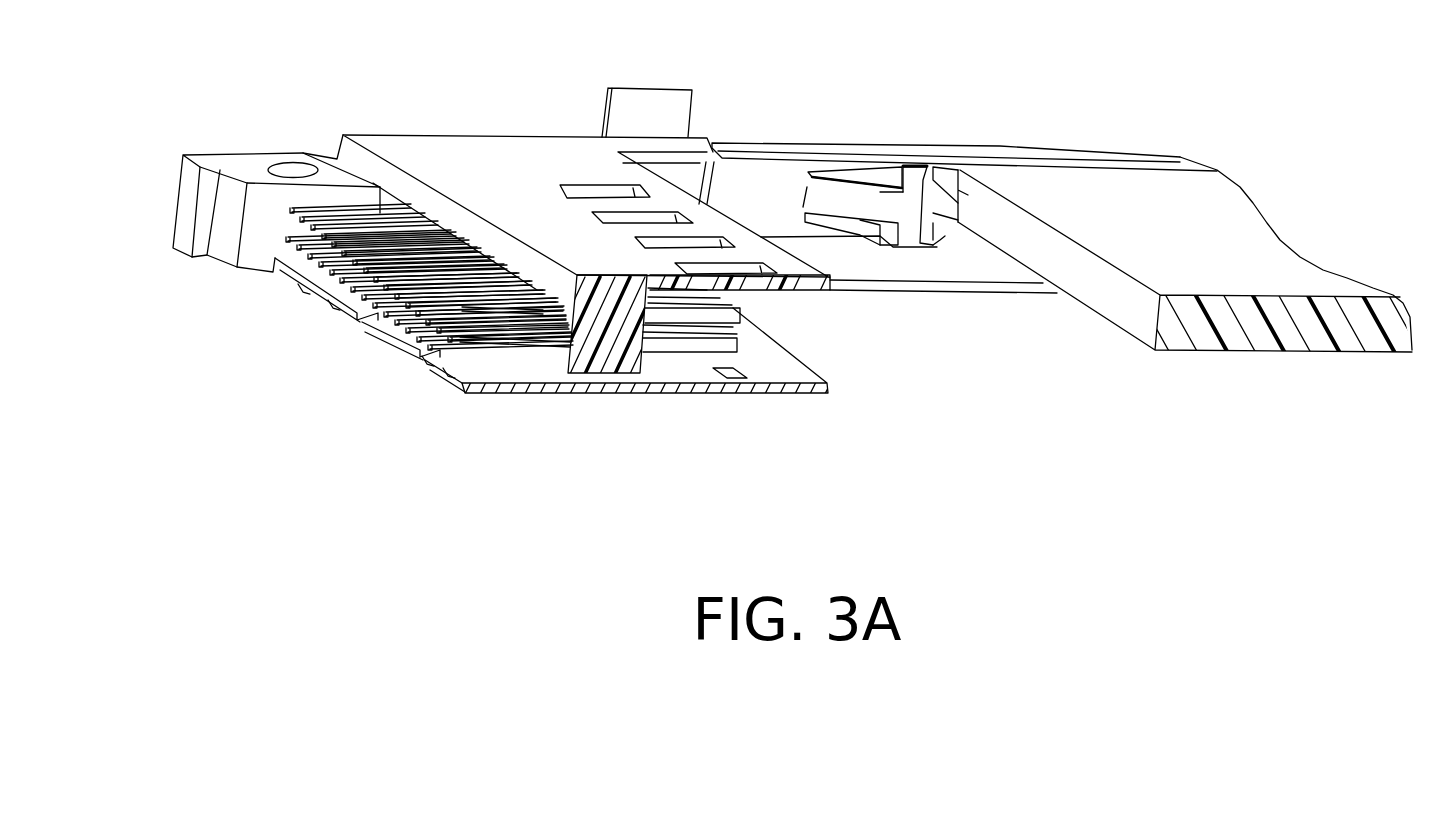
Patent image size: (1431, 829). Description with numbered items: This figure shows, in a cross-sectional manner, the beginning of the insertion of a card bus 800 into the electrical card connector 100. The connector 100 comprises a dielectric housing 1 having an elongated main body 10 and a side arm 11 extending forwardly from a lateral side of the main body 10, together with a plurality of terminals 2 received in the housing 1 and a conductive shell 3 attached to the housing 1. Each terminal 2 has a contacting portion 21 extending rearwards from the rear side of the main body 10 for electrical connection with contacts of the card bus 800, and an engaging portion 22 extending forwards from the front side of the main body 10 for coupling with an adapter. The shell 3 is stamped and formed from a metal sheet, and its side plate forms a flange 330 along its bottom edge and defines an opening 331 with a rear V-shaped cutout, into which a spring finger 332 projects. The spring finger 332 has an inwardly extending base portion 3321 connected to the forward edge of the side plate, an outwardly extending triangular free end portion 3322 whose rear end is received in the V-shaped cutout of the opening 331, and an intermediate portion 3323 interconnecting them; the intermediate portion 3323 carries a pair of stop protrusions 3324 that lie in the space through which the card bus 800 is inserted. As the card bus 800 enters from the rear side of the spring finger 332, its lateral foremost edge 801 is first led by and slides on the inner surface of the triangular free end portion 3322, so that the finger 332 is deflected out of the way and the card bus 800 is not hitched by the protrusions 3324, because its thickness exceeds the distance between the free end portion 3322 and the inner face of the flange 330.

The electrical card connector 100 is at (458, 112).
The dielectric housing 1 is at (612, 335).
The main body 10 is at (400, 147).
The side arm 11 is at (187, 207).
The terminal 2 is at (353, 278).
The contacting portion 21 is at (720, 343).
The engaging portion 22 is at (485, 335).
The conductive shell 3 is at (1100, 152).
The flange 330 is at (1137, 155).
The opening 331 is at (815, 172).
The spring finger 332 is at (837, 198).
The base portion 3321 is at (873, 210).
The triangular free end portion 3322 is at (937, 207).
The intermediate portion 3323 is at (918, 192).
The stop protrusion 3324 is at (938, 205).
The card bus 800 is at (1226, 380).
The lateral foremost edge 801 is at (960, 170).